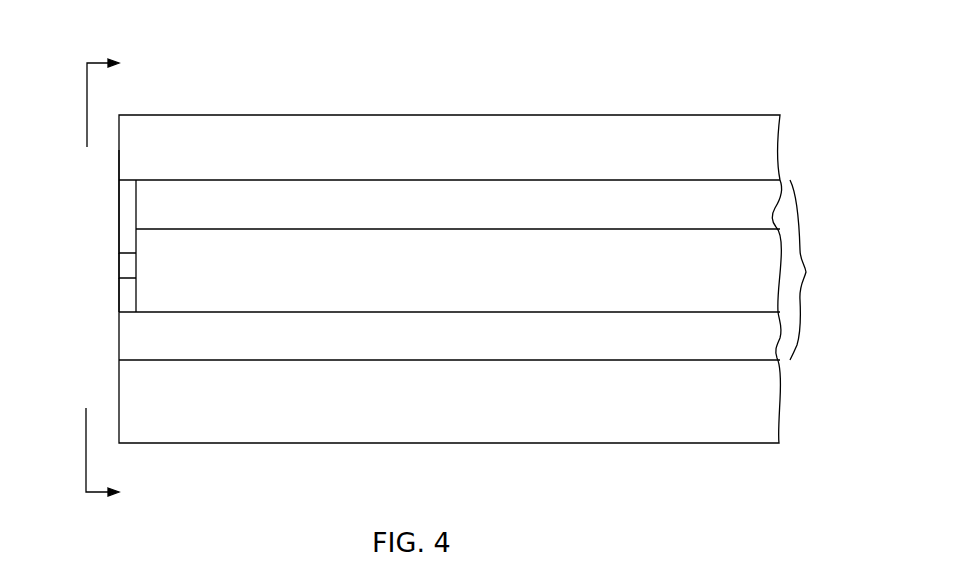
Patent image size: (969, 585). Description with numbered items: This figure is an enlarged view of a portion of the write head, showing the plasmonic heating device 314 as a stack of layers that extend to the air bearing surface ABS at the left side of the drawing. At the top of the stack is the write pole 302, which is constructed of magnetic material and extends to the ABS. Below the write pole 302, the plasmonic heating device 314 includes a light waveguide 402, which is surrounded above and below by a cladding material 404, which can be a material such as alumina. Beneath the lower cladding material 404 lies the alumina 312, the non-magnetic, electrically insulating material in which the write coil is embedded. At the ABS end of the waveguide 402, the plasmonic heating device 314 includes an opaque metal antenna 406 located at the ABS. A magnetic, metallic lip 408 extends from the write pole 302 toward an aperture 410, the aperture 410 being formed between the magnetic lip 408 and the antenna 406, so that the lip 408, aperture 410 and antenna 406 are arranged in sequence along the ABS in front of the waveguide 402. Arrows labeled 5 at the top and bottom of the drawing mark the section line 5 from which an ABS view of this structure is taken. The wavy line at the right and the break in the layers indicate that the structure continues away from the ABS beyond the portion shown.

The write pole 302 is at (449, 147).
The alumina 312 is at (449, 377).
The plasmonic heating device 314 is at (797, 192).
The light waveguide 402 is at (458, 246).
The cladding material 404 is at (450, 290).
The opaque metal antenna 406 is at (122, 302).
The magnetic metallic lip 408 is at (129, 226).
The aperture 410 is at (128, 270).
The air bearing surface ABS is at (118, 172).
The section line 5- 5 is at (117, 276).